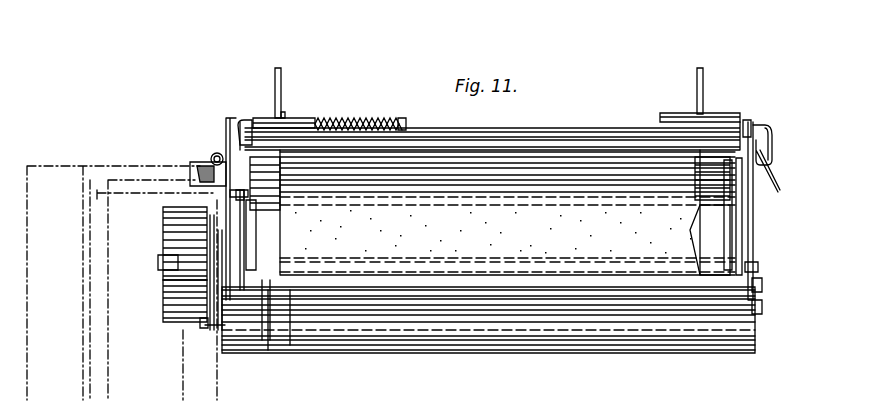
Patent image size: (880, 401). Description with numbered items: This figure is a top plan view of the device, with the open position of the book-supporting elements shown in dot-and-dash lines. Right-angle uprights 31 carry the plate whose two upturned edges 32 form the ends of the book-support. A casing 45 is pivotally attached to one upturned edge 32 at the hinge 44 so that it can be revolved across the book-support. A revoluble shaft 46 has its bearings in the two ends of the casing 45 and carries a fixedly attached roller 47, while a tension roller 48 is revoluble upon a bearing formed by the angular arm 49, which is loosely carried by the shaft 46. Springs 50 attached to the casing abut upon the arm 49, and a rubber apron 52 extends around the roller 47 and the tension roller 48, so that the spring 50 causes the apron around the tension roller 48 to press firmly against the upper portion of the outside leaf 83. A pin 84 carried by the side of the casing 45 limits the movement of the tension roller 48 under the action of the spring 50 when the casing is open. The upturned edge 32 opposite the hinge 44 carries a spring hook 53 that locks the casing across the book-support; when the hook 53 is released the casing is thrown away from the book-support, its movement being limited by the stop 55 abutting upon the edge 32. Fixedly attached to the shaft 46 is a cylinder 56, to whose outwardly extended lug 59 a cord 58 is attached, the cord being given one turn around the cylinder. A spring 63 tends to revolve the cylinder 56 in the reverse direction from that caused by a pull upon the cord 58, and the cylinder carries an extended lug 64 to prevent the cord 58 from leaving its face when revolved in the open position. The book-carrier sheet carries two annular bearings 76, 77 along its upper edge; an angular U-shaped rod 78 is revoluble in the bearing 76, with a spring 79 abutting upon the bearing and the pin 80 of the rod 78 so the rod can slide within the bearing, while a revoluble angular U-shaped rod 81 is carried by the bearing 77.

The right-angle upright 31 is at (703, 75).
The upturned edge 32 is at (755, 125).
The hinge 44 is at (212, 156).
The casing 45 is at (572, 312).
The revoluble shaft 46 is at (758, 266).
The roller 47 is at (705, 245).
The tension roller 48 is at (262, 168).
The angular arm 49 is at (740, 198).
The spring 50 is at (732, 212).
The rubber apron 52 is at (493, 232).
The spring hook 53 is at (768, 128).
The stop 55 is at (198, 166).
The cylinder 56 is at (175, 240).
The cord 58 is at (182, 250).
The outwardly extended lug 59 is at (172, 298).
The spring 63 is at (218, 300).
The extended lug 64 is at (204, 325).
The annular bearing 76 is at (279, 68).
The annular bearing 77 is at (675, 115).
The angular U-shaped rod 78 is at (262, 118).
The spring 79 is at (369, 118).
The pin 80 is at (402, 118).
The revoluble angular U-shaped rod 81 is at (745, 120).
The leaf 83 is at (600, 135).
The pin 84 is at (226, 197).